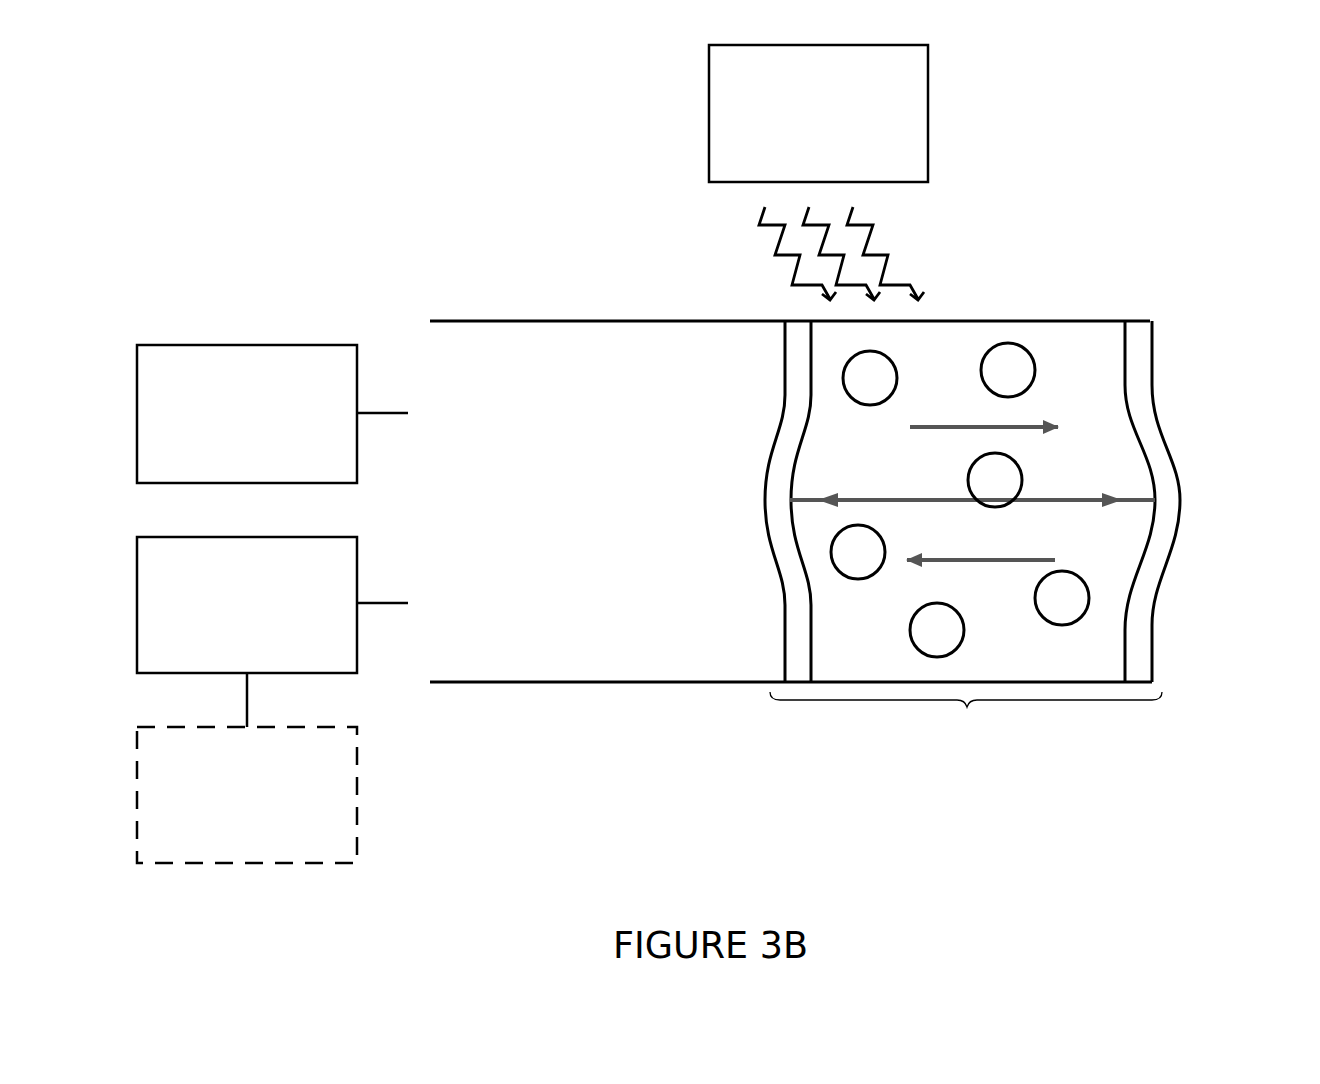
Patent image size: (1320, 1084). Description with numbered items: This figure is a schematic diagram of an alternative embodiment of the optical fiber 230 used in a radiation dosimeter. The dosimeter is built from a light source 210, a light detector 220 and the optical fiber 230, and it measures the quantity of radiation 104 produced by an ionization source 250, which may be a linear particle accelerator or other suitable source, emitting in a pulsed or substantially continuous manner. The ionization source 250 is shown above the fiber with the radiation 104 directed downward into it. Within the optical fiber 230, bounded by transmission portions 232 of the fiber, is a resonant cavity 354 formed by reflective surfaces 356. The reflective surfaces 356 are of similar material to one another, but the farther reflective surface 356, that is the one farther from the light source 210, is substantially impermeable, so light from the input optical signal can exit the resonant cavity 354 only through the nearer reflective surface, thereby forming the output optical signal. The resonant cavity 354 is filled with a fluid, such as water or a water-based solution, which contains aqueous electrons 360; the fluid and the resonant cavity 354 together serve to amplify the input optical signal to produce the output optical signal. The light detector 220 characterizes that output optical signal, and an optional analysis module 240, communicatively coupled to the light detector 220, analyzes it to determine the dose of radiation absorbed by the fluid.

The ionization source 250 is at (845, 171).
The light source 210 is at (272, 453).
The light detector 220 is at (272, 641).
The analysis module 240 is at (272, 851).
The transmission portions 232 is at (790, 284).
The optical fiber 230 is at (1094, 288).
The reflective surfaces 356 is at (830, 648).
The resonant cavity 354 is at (966, 731).
The aqueous electrons 360 is at (1034, 462).
The radiation 104 is at (934, 266).